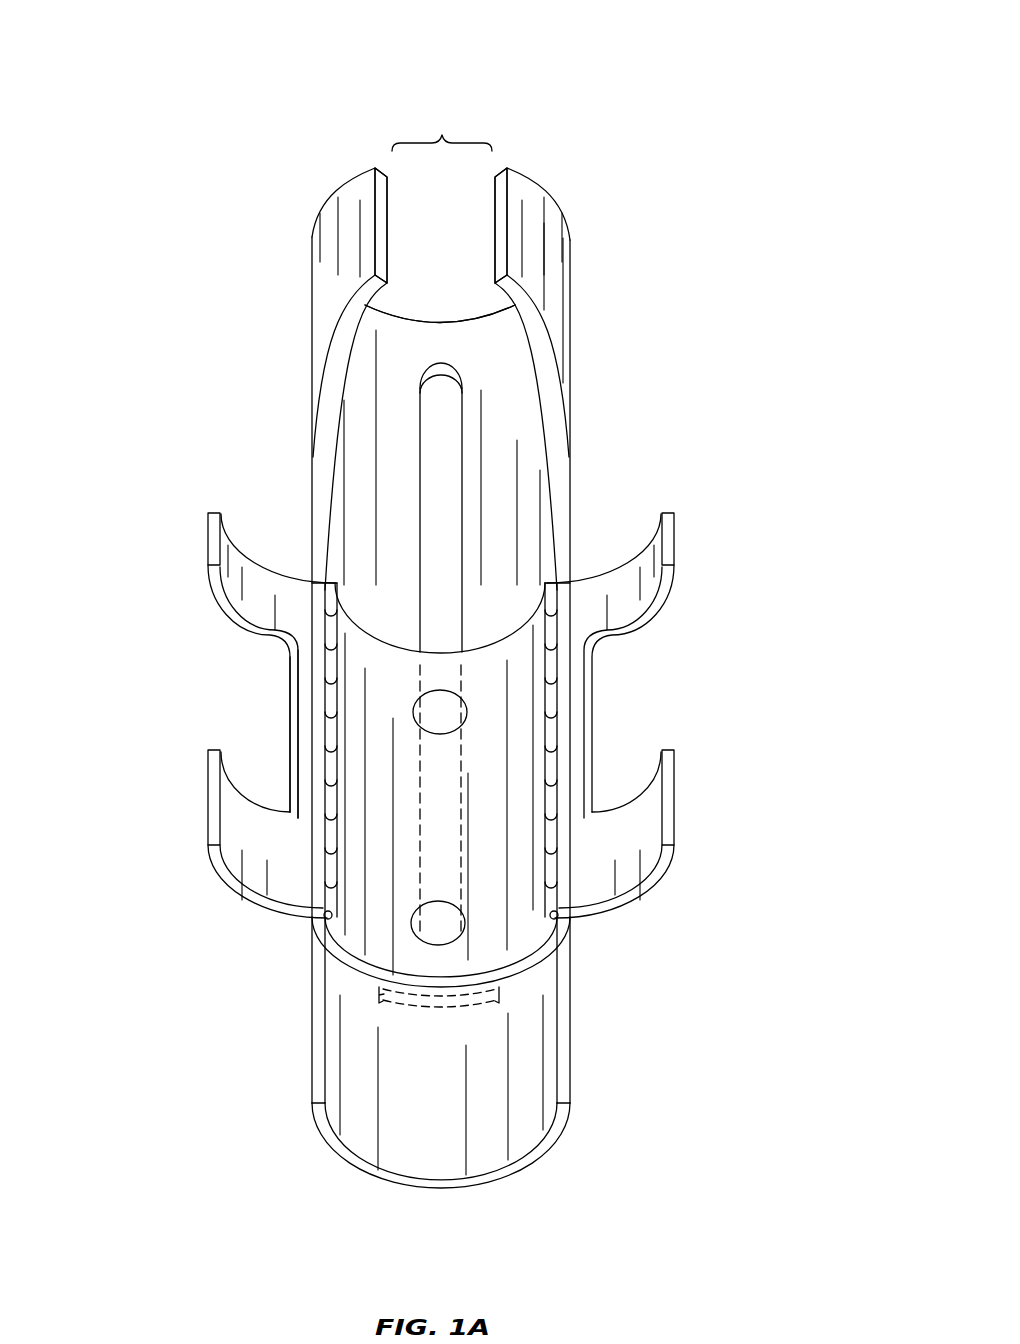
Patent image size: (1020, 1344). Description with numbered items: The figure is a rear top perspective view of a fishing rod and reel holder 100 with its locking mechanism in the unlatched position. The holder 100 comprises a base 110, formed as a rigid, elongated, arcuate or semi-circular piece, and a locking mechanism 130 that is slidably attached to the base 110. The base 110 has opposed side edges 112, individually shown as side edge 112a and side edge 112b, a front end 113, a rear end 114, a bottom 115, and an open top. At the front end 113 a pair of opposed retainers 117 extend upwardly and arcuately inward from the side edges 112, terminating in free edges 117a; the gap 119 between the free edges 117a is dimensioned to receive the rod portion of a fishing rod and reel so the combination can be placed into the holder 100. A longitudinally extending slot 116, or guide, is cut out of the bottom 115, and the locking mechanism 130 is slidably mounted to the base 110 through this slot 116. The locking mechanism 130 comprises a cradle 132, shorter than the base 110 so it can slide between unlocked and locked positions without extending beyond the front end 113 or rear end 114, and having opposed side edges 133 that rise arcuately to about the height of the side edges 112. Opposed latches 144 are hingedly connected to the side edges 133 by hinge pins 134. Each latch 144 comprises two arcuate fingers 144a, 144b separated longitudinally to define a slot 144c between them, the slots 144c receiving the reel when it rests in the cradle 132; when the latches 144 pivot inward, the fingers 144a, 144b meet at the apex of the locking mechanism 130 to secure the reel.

The fishing rod and reel holder 100 is at (617, 75).
The base 110 is at (570, 417).
The opposed side edges 112 is at (562, 1050).
The side edge 112a is at (318, 460).
The side edge 112b is at (560, 462).
The front end 113 is at (434, 322).
The rear end 114 is at (480, 1185).
The bottom 115 is at (400, 1140).
The slot 116 is at (460, 818).
The retainers 117 is at (365, 233).
The free edges 117a is at (387, 170).
The gap 119 is at (442, 129).
The locking mechanism 130 is at (347, 957).
The cradle 132 is at (497, 940).
The opposed side edges 133 is at (553, 582).
The hinge pins 134 is at (550, 697).
The latches 144 is at (665, 616).
The finger 144a is at (207, 537).
The finger 144b is at (207, 812).
The slot 144c is at (226, 648).